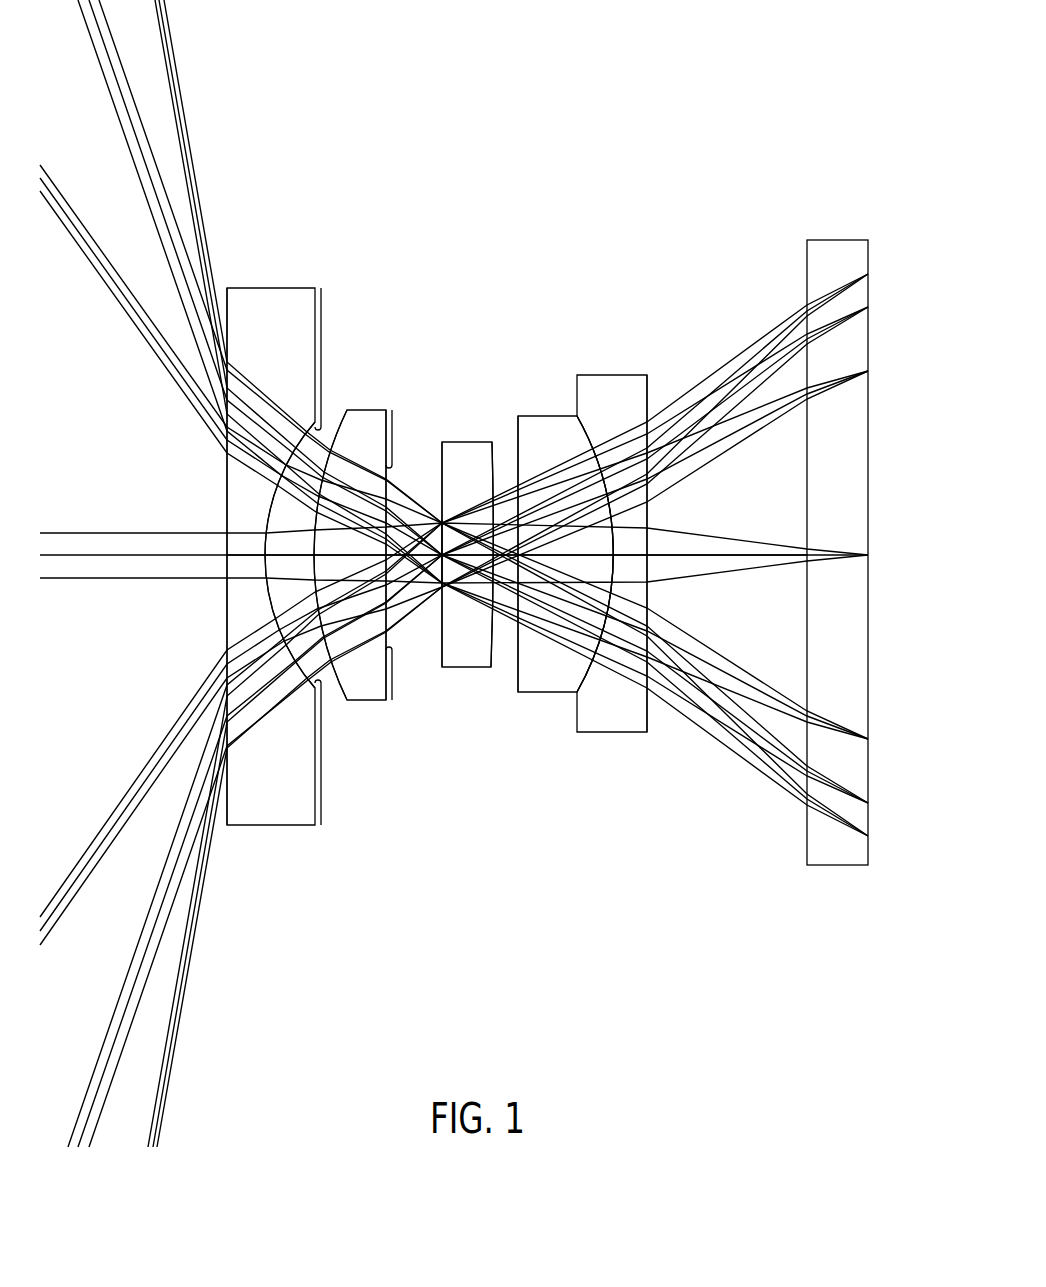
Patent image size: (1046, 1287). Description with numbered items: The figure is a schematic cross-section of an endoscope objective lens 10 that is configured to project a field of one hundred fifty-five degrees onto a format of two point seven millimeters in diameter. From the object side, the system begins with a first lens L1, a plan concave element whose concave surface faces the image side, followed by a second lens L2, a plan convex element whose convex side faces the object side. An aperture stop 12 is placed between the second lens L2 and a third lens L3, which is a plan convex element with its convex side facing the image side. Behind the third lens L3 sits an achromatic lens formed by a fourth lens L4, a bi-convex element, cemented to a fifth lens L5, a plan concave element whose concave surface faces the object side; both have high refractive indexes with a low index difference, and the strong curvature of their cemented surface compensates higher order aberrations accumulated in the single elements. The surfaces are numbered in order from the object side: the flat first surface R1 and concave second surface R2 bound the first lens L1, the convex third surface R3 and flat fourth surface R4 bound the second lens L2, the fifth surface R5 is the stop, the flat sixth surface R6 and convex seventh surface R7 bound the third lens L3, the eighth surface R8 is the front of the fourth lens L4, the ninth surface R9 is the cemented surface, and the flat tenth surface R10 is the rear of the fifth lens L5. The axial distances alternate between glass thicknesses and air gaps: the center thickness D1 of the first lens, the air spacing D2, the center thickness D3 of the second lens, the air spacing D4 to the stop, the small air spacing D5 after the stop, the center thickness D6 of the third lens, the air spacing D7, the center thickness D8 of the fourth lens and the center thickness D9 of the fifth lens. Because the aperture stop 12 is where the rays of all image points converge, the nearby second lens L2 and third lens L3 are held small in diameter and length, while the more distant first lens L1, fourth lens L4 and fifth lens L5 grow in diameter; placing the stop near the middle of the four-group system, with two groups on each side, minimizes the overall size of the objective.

The endoscope objective lens 10 is at (600, 168).
The aperture stop 12 is at (439, 522).
The first lens L1 is at (272, 826).
The second lens L2 is at (358, 701).
The third lens L3 is at (462, 668).
The fourth lens L4 is at (537, 693).
The fifth lens L5 is at (608, 733).
The first surface R1 is at (230, 289).
The second surface R2 is at (321, 427).
The third surface R3 is at (331, 432).
The fourth surface R4 is at (392, 410).
The fifth surface R5 is at (439, 466).
The sixth surface R6 is at (497, 460).
The seventh surface R7 is at (513, 470).
The eighth surface R8 is at (590, 440).
The ninth surface R9 is at (577, 680).
The tenth surface R10 is at (648, 716).
The center thickness of first lens D1 is at (243, 556).
The air spacing after second surface D2 is at (276, 558).
The center thickness of second lens D3 is at (323, 556).
The air spacing after fourth surface D4 is at (410, 560).
The air spacing after stop D5 is at (440, 560).
The center thickness of third lens D6 is at (462, 557).
The air spacing after seventh surface D7 is at (512, 560).
The center thickness of fourth lens D8 is at (613, 557).
The center thickness of fifth lens D9 is at (632, 557).